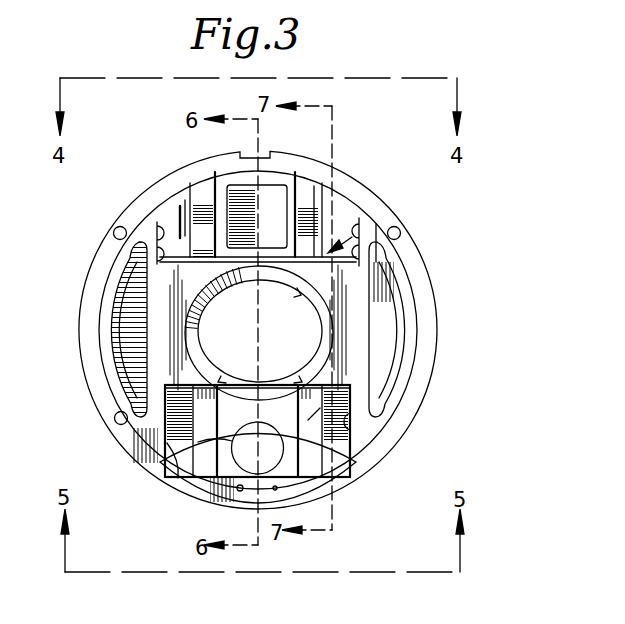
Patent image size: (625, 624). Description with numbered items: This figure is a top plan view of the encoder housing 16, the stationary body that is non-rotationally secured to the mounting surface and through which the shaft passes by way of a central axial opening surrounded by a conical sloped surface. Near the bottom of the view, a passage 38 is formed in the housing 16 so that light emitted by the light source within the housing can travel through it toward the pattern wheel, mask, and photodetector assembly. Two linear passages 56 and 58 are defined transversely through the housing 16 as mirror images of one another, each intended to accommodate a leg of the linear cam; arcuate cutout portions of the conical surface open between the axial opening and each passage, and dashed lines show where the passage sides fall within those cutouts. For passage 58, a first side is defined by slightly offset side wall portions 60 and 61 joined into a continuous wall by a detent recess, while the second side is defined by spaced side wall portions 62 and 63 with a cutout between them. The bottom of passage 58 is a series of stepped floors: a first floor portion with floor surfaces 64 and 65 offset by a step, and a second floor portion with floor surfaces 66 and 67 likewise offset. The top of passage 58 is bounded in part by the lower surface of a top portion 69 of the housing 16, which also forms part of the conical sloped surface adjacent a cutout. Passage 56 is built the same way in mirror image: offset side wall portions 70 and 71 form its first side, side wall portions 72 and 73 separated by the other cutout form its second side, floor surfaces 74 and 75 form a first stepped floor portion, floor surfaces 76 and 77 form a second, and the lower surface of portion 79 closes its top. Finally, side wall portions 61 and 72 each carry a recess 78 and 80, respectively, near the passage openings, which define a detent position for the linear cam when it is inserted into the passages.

The encoder housing 16 is at (425, 354).
The passage 38 is at (240, 460).
The linear passage 56 is at (178, 205).
The linear passage 58 is at (401, 237).
The side wall portion 60 is at (352, 428).
The side wall portion 61 is at (379, 274).
The side wall portion 62 is at (338, 470).
The side wall portion 63 is at (309, 211).
The floor surface 64 is at (346, 204).
The floor surface 65 is at (340, 213).
The floor surface 66 is at (352, 398).
The floor surface 67 is at (345, 442).
The top portion 69 is at (350, 318).
The side wall portion 70 is at (160, 260).
The side wall portion 71 is at (165, 388).
The side wall portion 72 is at (209, 228).
The side wall portion 73 is at (198, 457).
The floor surface 74 is at (178, 224).
The floor surface 75 is at (157, 208).
The floor surface 76 is at (205, 440).
The floor surface 77 is at (140, 430).
The recess 78 is at (377, 224).
The portion 79 is at (135, 336).
The recess 80 is at (113, 237).